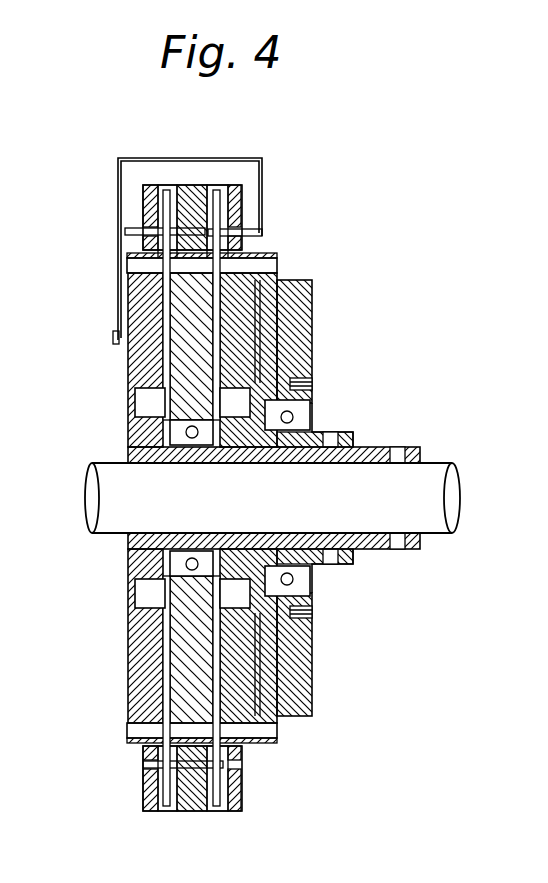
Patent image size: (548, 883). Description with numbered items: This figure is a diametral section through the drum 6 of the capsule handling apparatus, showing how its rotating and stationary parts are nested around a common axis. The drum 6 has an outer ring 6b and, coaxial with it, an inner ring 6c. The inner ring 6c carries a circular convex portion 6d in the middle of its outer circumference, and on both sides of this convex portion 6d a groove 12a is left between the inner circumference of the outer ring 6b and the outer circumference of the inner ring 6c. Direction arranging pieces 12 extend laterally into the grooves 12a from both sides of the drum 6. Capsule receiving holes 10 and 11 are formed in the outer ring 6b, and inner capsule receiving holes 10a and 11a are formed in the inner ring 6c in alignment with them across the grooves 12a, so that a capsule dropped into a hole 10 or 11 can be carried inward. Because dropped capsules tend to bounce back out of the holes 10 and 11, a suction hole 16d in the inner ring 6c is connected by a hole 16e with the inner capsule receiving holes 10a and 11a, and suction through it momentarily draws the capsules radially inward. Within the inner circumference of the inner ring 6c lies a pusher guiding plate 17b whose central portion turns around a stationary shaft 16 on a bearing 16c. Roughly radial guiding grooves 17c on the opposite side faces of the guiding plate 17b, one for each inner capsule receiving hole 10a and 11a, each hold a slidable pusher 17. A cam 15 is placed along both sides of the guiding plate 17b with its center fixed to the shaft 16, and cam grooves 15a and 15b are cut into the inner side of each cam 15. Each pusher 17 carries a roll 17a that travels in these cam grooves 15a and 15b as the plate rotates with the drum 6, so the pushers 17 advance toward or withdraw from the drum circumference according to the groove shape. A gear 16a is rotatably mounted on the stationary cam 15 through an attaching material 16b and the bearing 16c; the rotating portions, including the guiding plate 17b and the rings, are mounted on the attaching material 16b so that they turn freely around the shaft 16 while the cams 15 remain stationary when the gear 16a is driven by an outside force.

The drum 6 is at (191, 183).
The outer ring 6b is at (143, 225).
The inner ring 6c is at (145, 253).
The circular convex portion 6d is at (204, 187).
The capsule receiving hole 10 is at (219, 190).
The inner capsule receiving hole 10a is at (218, 246).
The capsule receiving hole 11 is at (168, 240).
The inner capsule receiving hole 11a is at (165, 205).
The direction arranging piece 12 is at (140, 237).
The groove 12a is at (140, 228).
The cam 15 is at (305, 431).
The cam groove 15a is at (308, 373).
The cam groove 15b is at (134, 404).
The stationary shaft 16 is at (420, 483).
The gear 16a is at (300, 312).
The attaching material 16b is at (306, 350).
The bearing 16c is at (172, 435).
The suction hole 16d is at (140, 264).
The hole 16e is at (142, 250).
The pusher 17 is at (200, 372).
The roll 17a is at (140, 393).
The pusher guiding plate 17b is at (295, 333).
The guiding groove 17c is at (180, 330).